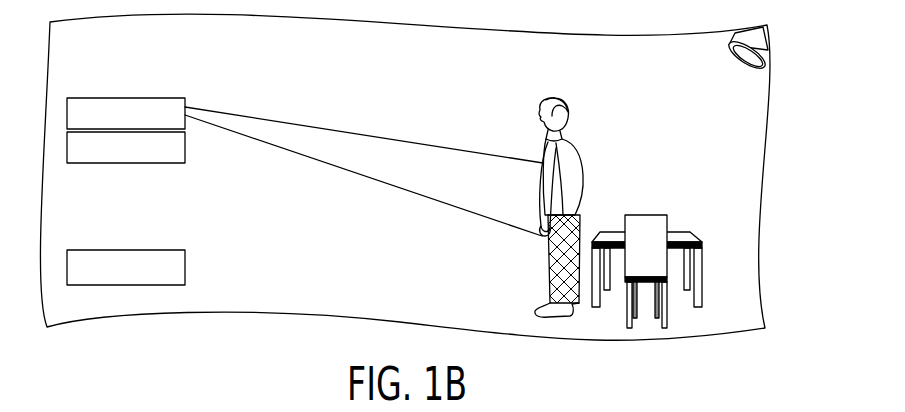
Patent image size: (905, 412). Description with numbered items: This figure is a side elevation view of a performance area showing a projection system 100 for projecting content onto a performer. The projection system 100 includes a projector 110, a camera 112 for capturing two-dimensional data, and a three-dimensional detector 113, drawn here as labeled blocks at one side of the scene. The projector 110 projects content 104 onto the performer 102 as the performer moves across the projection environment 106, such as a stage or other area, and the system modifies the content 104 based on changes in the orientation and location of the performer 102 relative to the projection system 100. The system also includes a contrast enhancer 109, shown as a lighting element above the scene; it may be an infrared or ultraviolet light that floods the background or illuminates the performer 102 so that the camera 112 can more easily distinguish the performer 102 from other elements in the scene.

The projection system 100 is at (198, 100).
The performer 102 is at (577, 160).
The content 104 is at (405, 148).
The projection environment 106 is at (628, 68).
The contrast enhancer 109 is at (763, 40).
The projector 110 is at (128, 98).
The camera 112 is at (127, 163).
The 3D detector 113 is at (185, 265).